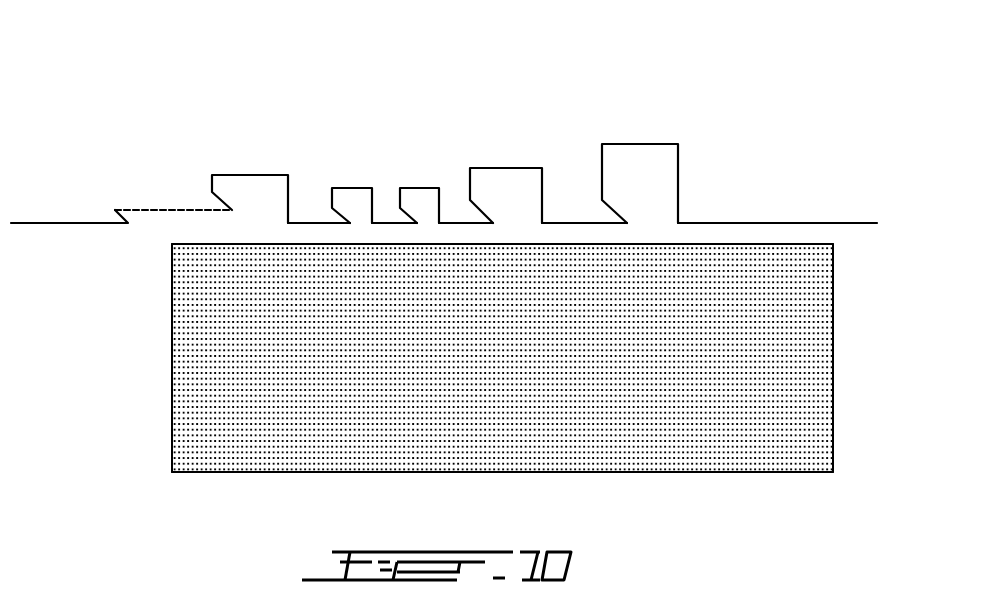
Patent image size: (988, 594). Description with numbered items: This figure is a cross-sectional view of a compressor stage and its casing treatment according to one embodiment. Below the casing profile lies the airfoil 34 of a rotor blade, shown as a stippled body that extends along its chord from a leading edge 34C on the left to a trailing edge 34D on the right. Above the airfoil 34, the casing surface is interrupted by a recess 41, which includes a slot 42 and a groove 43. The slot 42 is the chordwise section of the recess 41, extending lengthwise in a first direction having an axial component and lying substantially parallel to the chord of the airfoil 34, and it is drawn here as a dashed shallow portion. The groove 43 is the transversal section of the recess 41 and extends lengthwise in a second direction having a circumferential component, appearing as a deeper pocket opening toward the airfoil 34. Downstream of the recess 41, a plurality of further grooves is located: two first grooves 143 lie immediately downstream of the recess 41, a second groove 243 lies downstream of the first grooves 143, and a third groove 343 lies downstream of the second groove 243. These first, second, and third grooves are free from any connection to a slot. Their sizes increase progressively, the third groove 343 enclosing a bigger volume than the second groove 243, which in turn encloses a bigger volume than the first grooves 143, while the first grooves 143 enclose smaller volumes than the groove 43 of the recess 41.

The airfoil 34 is at (137, 378).
The leading edge 34C is at (172, 312).
The trailing edge 34D is at (833, 358).
The recess 41 is at (185, 155).
The slot 42 is at (153, 203).
The groove 43 is at (248, 167).
The first grooves 143 is at (417, 180).
The second groove 243 is at (498, 158).
The third groove 343 is at (638, 138).